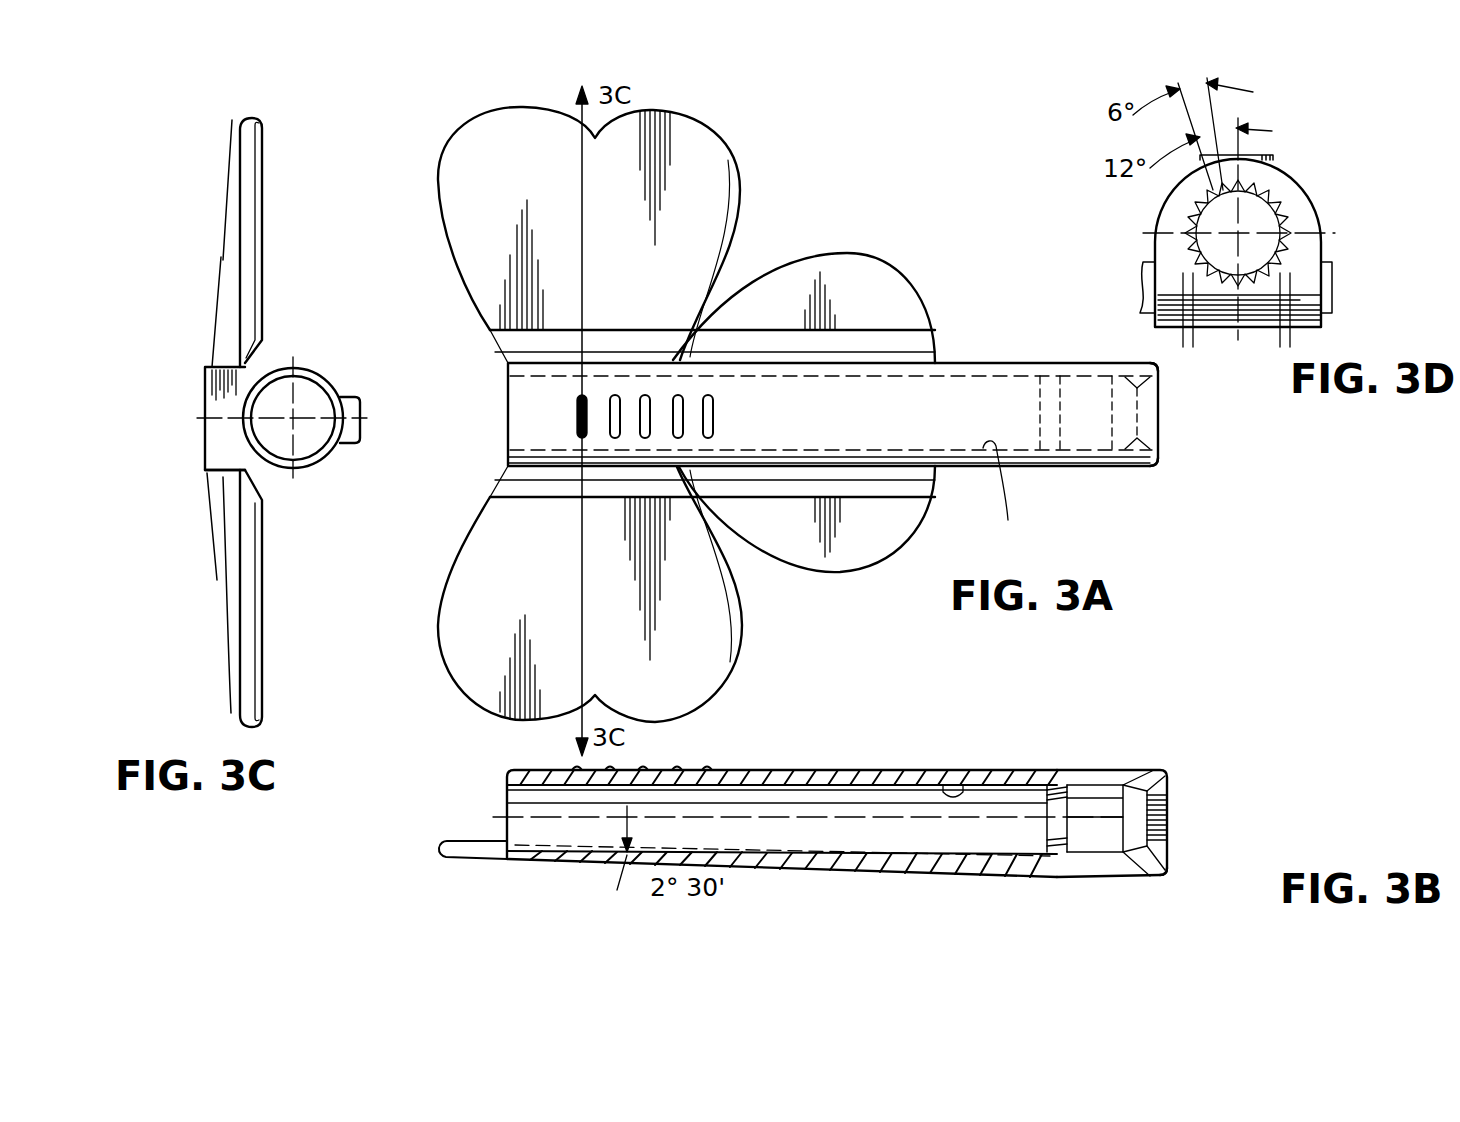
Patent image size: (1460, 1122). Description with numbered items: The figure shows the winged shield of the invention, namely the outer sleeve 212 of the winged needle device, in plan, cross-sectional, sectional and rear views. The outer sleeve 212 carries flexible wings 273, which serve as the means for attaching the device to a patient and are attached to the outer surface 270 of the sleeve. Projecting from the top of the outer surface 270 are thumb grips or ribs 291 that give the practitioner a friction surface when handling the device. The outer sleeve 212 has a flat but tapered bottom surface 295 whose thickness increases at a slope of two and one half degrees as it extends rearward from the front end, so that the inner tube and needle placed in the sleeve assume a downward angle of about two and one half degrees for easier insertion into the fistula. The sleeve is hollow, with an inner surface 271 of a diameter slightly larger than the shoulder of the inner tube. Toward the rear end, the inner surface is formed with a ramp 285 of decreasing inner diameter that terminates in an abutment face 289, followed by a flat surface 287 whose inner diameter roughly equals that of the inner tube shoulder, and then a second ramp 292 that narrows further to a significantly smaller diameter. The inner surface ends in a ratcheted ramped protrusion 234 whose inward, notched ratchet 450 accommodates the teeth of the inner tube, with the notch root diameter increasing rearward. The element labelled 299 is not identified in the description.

In FIG. 3A, the outer sleeve 212 is at (851, 246).
In FIG. 3A, the ratcheted ramped protrusion 234 is at (1158, 373).
In FIG. 3B, the ratcheted ramped protrusion 234 is at (1170, 872).
In FIG. 3A, the outer surface 270 is at (955, 468).
In FIG. 3B, the outer surface 270 is at (828, 768).
In FIG. 3C, the outer surface 270 is at (327, 457).
In FIG. 3A, the inner surface 271 is at (1009, 496).
In FIG. 3B, the inner surface 271 is at (957, 790).
In FIG. 3C, the inner surface 271 is at (312, 362).
In FIG. 3A, the flexible wings 273 is at (742, 197).
In FIG. 3B, the flexible wings 273 is at (452, 858).
In FIG. 3C, the flexible wings 273 is at (250, 222).
In FIG. 3D, the flexible wings 273 is at (1330, 278).
In FIG. 3A, the ramp 285 is at (1047, 450).
In FIG. 3B, the ramp 285 is at (1058, 853).
In FIG. 3A, the flat surface 287 is at (1107, 465).
In FIG. 3B, the flat surface 287 is at (1097, 860).
In FIG. 3A, the abutment face 289 is at (1087, 443).
In FIG. 3A, the thumb grips or ribs 291 is at (580, 426).
In FIG. 3B, the thumb grips or ribs 291 is at (677, 768).
In FIG. 3C, the thumb grips or ribs 291 is at (346, 397).
In FIG. 3D, the thumb grips or ribs 291 is at (1273, 160).
In FIG. 3A, the ramp 292 is at (1162, 463).
In FIG. 3B, the ramp 292 is at (1150, 770).
In FIG. 3B, the bottom surface 295 is at (825, 862).
In FIG. 3C, the bottom surface 295 is at (215, 455).
In FIG. 3B, the cap body 299 is at (1170, 776).
In FIG. 3D, the cap body 299 is at (1303, 227).
In FIG. 3B, the ratchet 450 is at (1168, 826).
In FIG. 3D, the ratchet 450 is at (1290, 225).